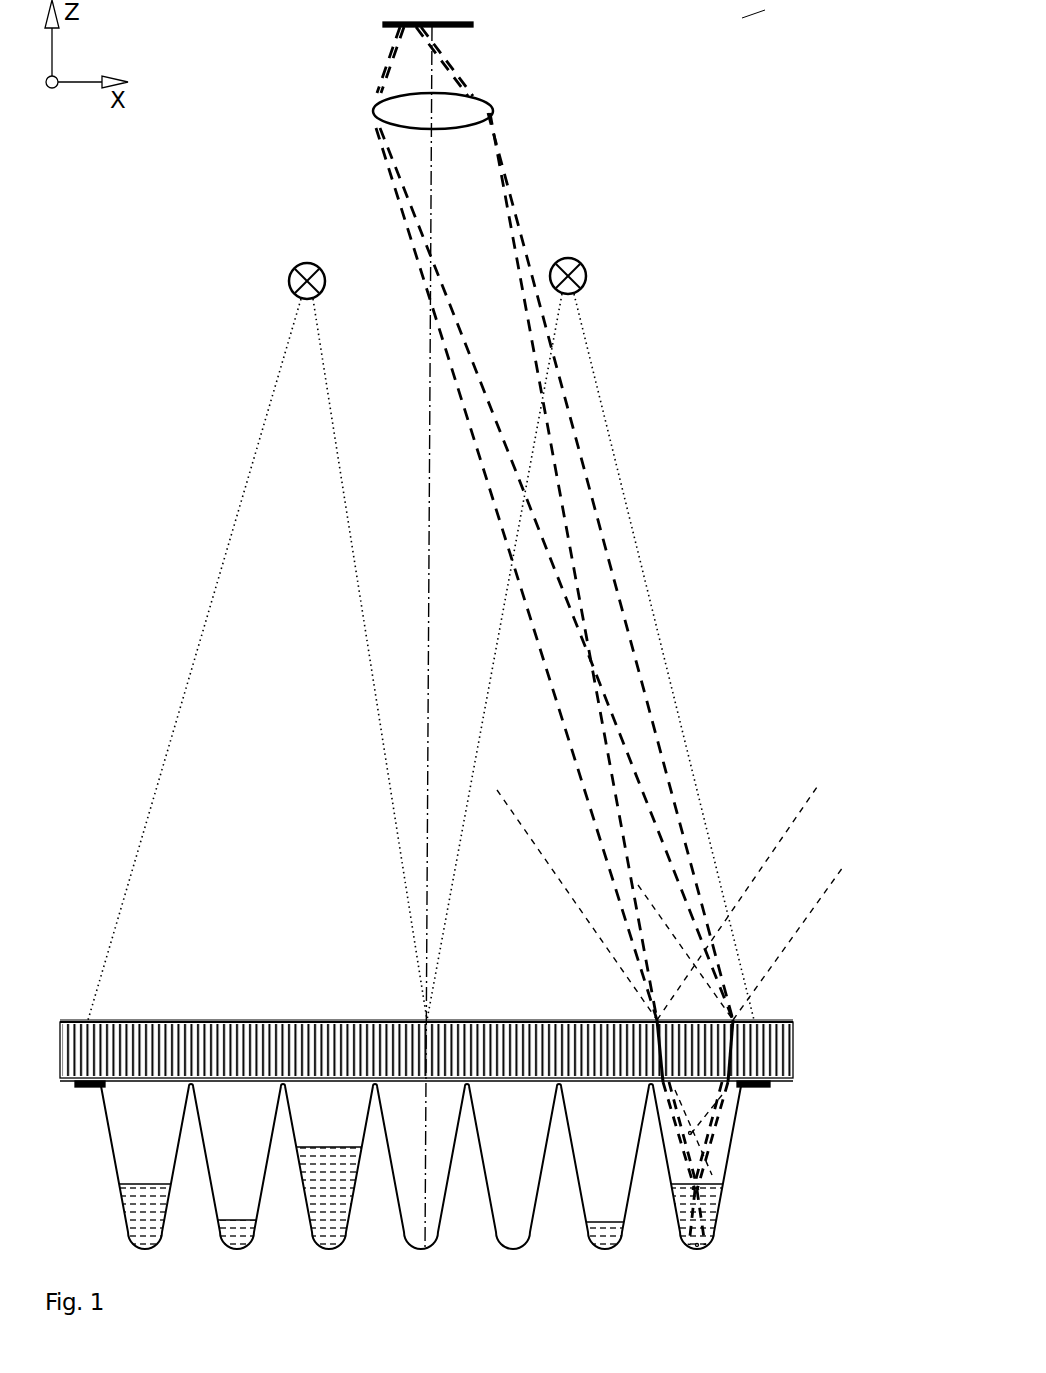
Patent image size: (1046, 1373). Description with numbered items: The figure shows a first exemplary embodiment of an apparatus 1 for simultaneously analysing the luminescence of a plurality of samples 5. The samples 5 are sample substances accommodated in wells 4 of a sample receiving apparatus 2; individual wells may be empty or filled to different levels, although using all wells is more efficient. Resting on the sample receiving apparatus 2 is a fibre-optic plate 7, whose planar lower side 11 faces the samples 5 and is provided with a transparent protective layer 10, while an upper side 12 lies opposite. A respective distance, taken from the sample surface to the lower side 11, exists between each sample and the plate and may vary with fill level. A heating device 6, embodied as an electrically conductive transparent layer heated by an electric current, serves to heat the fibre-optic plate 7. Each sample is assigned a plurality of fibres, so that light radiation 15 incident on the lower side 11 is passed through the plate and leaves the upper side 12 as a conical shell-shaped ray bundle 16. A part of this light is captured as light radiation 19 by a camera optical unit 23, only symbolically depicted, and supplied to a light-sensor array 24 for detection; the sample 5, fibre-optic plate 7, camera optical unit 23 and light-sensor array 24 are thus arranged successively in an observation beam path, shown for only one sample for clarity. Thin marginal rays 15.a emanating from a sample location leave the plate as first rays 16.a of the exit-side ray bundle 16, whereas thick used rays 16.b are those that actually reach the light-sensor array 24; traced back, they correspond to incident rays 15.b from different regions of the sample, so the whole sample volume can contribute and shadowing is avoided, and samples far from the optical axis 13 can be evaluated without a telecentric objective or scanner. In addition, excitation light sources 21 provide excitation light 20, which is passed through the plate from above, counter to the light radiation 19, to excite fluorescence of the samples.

The apparatus 1 is at (762, 14).
The sample receiving apparatus 2 is at (735, 1128).
The wells 4 is at (527, 1210).
The samples 5 is at (153, 1237).
The heating device 6 is at (794, 1022).
The fibre-optic plate 7 is at (794, 1052).
The transparent protective layer 10 is at (794, 1080).
The lower side 11 is at (461, 1104).
The upper side 12 is at (447, 995).
The optical axis 13 is at (428, 518).
The light radiation 15 is at (716, 1160).
The marginal rays 15.a is at (632, 1117).
The incident rays 15.b is at (655, 1260).
The ray bundle 16 is at (593, 597).
The first rays 16.a is at (674, 903).
The used rays 16.b is at (457, 114).
The light radiation 19 is at (703, 1187).
The excitation light 20 is at (615, 490).
The excitation light sources 21 is at (585, 262).
The camera optical unit 23 is at (489, 108).
The light-sensor array 24 is at (458, 40).